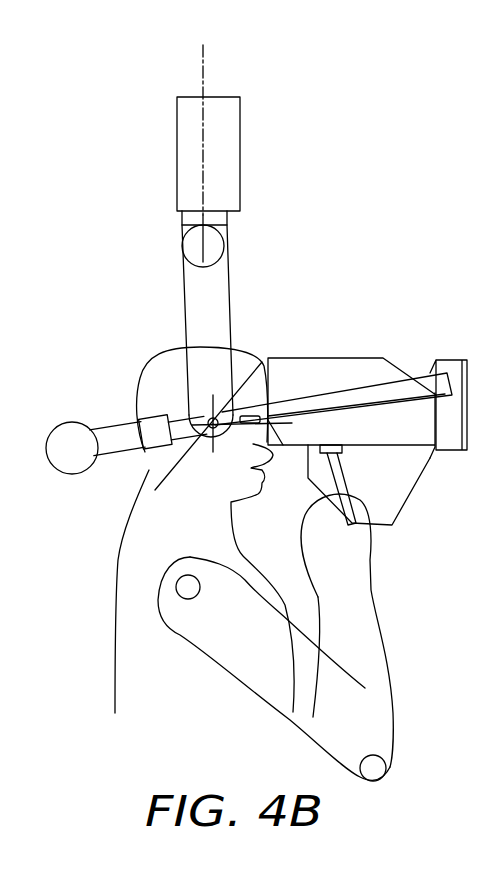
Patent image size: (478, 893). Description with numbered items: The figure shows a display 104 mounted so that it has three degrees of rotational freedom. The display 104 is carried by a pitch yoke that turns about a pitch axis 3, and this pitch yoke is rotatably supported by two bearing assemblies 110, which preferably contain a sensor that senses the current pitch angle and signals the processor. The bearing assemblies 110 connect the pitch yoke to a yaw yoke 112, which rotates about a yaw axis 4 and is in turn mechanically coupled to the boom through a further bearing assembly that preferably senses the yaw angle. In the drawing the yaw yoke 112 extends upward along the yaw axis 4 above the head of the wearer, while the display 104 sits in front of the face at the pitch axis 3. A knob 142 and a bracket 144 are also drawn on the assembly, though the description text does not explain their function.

The yaw axis 4 is at (200, 139).
The pitch axis 3 is at (205, 416).
The display 104 is at (328, 366).
The bearing assemblies 110 is at (155, 489).
The yaw yoke 112 is at (220, 286).
The knob 142 is at (62, 475).
The bracket 144 is at (352, 523).